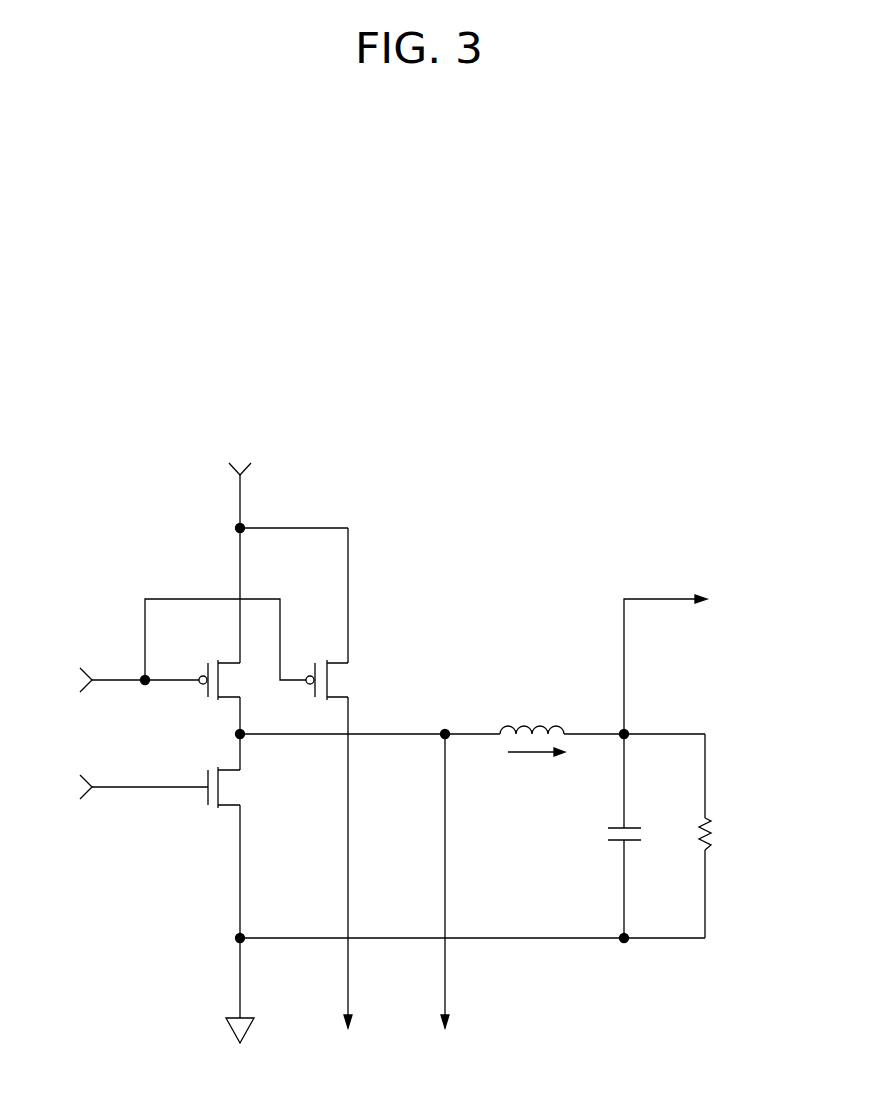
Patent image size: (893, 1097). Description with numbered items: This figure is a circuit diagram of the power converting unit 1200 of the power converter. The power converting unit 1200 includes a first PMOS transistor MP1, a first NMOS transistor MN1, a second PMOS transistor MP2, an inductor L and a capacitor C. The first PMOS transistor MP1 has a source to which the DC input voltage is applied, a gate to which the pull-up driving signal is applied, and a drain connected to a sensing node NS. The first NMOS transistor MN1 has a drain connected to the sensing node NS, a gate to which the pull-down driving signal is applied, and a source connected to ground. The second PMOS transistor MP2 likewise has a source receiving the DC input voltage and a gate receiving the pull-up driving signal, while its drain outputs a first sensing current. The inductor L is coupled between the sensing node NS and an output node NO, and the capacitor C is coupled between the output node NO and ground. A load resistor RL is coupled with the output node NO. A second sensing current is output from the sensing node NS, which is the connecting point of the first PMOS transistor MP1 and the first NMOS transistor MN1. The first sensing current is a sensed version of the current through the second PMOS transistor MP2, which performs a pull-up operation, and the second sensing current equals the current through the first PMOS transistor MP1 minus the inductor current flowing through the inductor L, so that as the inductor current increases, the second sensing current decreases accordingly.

The power converting unit 1200 is at (508, 382).
The first PMOS transistor MP1 is at (232, 680).
The second PMOS transistor MP2 is at (339, 680).
The first NMOS transistor MN1 is at (236, 787).
The inductor L is at (532, 715).
The capacitor C is at (613, 836).
The load resistor RL is at (721, 836).
The sensing node NS is at (445, 734).
The output node NO is at (624, 734).